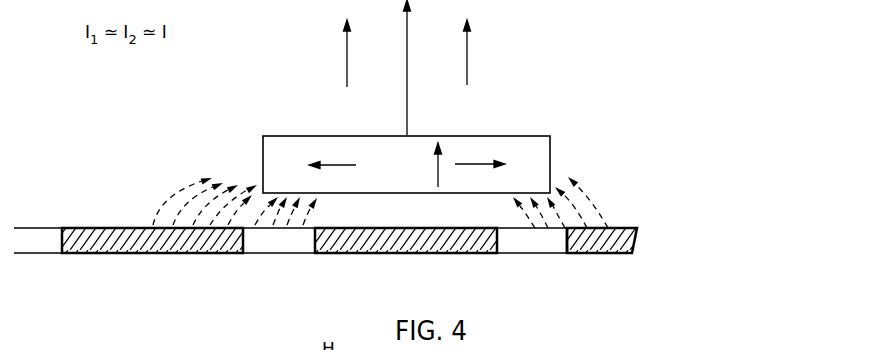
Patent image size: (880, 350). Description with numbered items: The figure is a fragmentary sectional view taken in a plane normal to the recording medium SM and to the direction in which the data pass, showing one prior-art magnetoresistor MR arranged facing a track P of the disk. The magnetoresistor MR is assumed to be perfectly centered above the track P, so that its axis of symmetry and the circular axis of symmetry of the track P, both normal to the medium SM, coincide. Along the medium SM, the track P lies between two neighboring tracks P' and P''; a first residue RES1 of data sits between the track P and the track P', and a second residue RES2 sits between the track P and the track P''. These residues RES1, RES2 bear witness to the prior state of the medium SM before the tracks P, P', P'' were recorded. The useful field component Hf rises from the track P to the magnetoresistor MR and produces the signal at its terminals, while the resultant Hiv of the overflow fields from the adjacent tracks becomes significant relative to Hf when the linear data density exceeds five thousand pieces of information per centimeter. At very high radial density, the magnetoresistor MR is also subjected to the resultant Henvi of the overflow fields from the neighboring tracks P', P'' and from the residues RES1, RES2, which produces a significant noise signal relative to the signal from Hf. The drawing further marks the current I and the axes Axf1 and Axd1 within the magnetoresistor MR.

The magnetoresistor MR is at (549, 166).
The medium SM is at (550, 253).
The residue RES1 is at (268, 253).
The residue RES2 is at (518, 253).
The track P is at (406, 266).
The neighboring track P' is at (152, 269).
The neighboring track P'' is at (602, 263).
The resultant of magnetic overflow fields Hiv is at (320, 59).
The field component Hf is at (416, 67).
The resultant of magnetic overflow fields Henvi is at (491, 62).
The axis Axf1 is at (336, 179).
The axis Axd1 is at (415, 169).
The current I is at (480, 155).